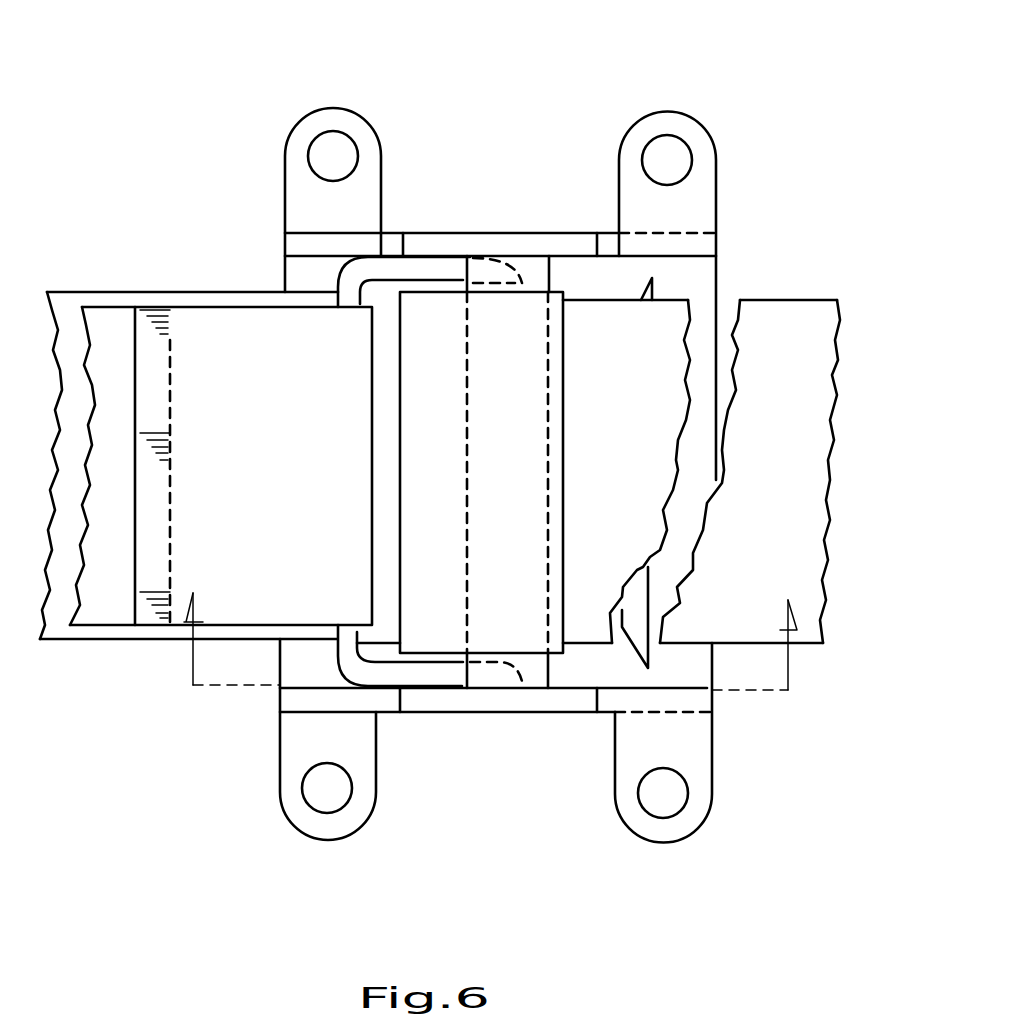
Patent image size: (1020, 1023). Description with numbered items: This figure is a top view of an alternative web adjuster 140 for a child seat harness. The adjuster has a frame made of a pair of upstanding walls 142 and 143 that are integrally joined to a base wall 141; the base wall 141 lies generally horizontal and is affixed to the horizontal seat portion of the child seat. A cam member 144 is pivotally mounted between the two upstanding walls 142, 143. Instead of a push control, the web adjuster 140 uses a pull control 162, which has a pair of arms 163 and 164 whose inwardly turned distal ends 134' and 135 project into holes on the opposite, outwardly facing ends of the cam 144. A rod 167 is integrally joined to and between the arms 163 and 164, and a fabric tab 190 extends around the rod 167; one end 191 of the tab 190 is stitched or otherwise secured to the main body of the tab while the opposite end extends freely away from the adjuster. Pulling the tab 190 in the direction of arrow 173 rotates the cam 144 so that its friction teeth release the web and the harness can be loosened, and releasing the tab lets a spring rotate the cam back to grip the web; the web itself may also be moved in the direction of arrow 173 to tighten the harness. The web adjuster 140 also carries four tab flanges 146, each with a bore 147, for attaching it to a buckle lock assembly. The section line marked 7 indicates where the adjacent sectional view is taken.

The web adjuster 140 is at (693, 75).
The base wall 141 is at (695, 667).
The upstanding wall 142 is at (516, 666).
The upstanding wall 143 is at (496, 250).
The cam member 144 is at (433, 645).
The tab flange 146 is at (378, 135).
The bore 147 is at (356, 160).
The pull control 162 is at (352, 673).
The arm 163 is at (420, 270).
The arm 164 is at (403, 675).
The rod 167 is at (336, 632).
The arrow 173 is at (72, 673).
The fabric tab 190 is at (107, 320).
The end of tab 191 is at (165, 322).
The inwardly turned distal end 134' is at (531, 243).
The inwardly turned distal end 135 is at (520, 668).
The section line 7- 7 is at (490, 628).